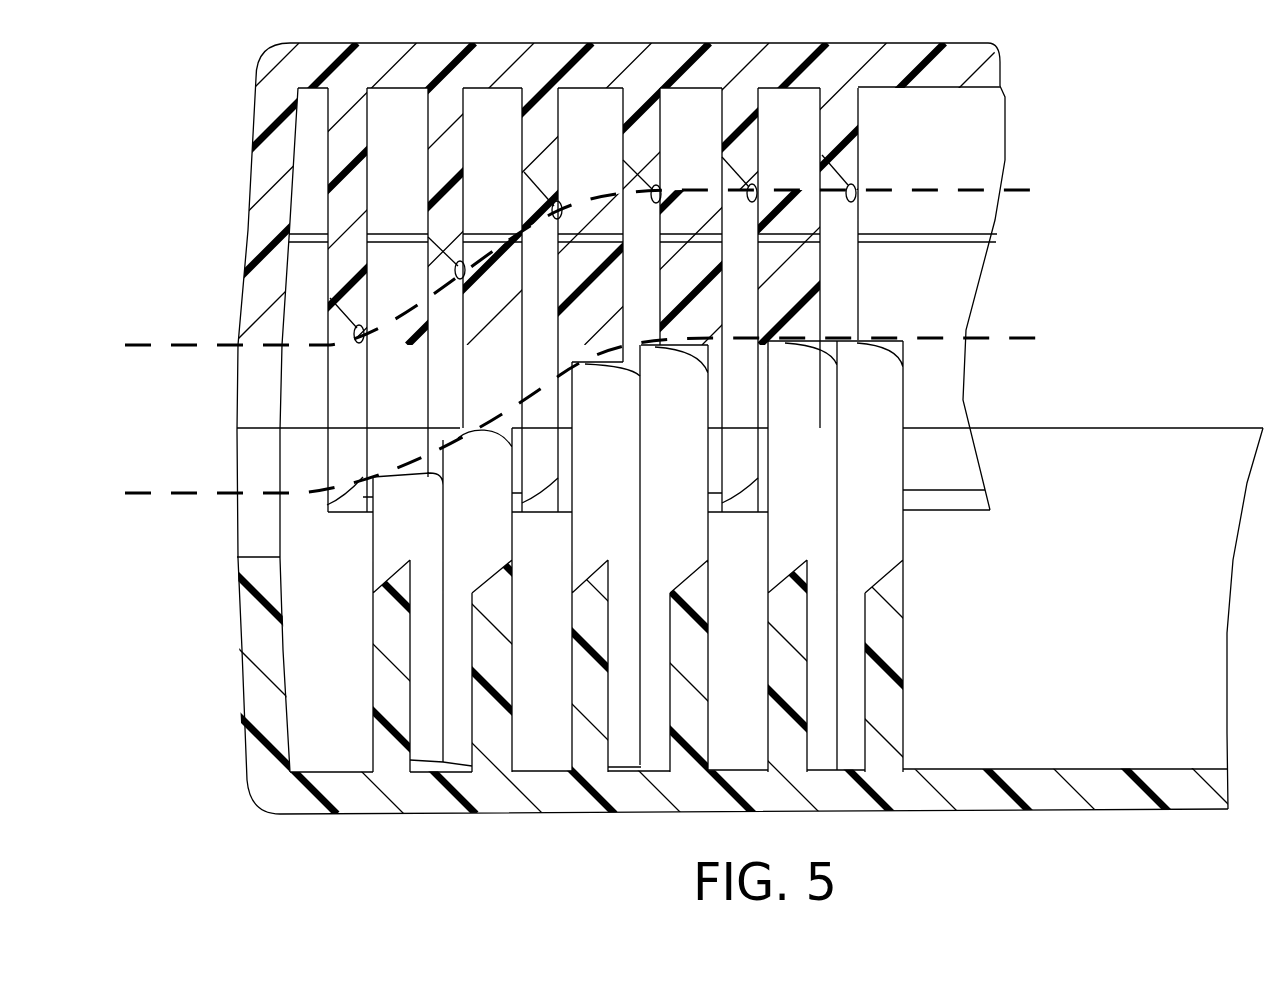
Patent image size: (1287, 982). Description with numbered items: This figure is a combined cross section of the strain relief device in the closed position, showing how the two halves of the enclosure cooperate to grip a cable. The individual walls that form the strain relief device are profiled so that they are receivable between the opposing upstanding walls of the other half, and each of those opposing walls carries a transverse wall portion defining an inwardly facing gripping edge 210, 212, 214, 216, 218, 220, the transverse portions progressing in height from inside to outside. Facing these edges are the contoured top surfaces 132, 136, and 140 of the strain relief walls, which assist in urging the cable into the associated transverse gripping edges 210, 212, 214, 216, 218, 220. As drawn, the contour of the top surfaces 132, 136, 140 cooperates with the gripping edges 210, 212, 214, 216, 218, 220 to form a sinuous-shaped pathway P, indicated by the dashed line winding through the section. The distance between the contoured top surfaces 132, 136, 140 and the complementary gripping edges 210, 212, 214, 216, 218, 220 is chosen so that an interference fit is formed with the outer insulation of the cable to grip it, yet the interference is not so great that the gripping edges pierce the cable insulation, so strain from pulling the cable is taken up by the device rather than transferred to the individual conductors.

The top surface 132 is at (405, 472).
The top surface 136 is at (618, 363).
The top surface 140 is at (858, 340).
The inwardly facing gripping edge 210 is at (858, 190).
The inwardly facing gripping edge 212 is at (759, 193).
The inwardly facing gripping edge 214 is at (663, 194).
The inwardly facing gripping edge 216 is at (563, 210).
The inwardly facing gripping edge 218 is at (465, 268).
The inwardly facing gripping edge 220 is at (365, 333).
The sinuous-shaped pathway P is at (1034, 192).